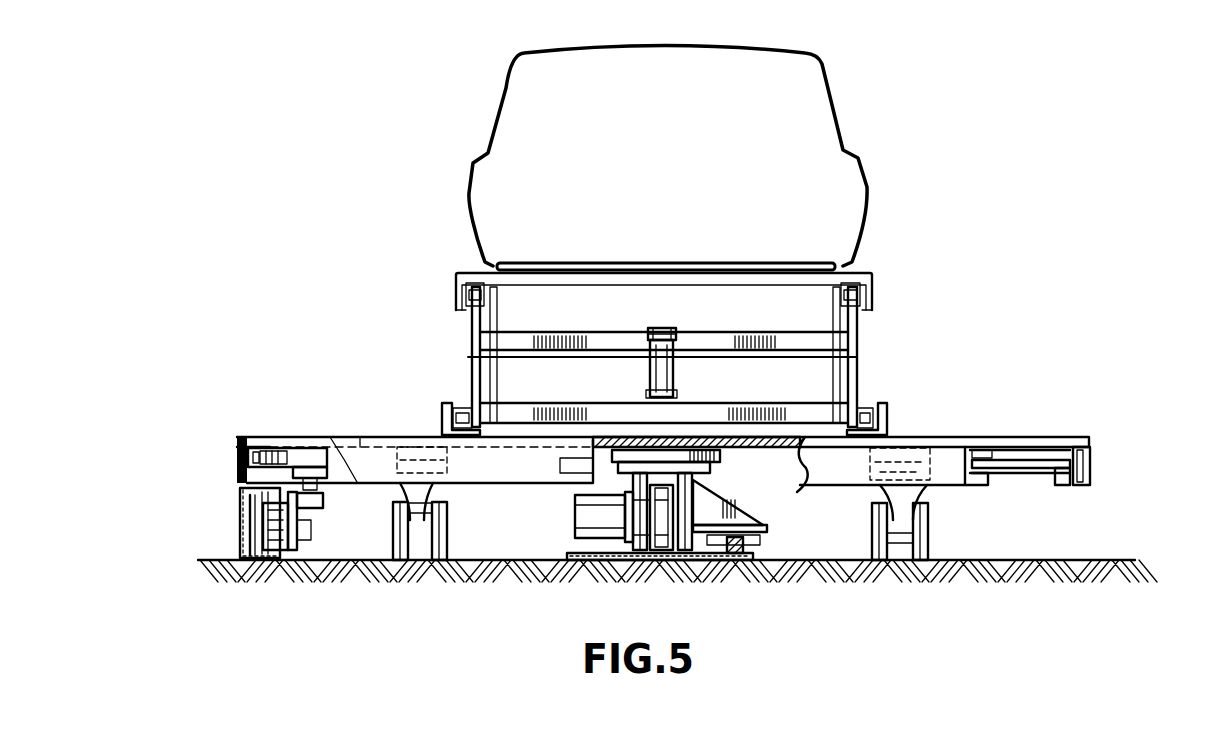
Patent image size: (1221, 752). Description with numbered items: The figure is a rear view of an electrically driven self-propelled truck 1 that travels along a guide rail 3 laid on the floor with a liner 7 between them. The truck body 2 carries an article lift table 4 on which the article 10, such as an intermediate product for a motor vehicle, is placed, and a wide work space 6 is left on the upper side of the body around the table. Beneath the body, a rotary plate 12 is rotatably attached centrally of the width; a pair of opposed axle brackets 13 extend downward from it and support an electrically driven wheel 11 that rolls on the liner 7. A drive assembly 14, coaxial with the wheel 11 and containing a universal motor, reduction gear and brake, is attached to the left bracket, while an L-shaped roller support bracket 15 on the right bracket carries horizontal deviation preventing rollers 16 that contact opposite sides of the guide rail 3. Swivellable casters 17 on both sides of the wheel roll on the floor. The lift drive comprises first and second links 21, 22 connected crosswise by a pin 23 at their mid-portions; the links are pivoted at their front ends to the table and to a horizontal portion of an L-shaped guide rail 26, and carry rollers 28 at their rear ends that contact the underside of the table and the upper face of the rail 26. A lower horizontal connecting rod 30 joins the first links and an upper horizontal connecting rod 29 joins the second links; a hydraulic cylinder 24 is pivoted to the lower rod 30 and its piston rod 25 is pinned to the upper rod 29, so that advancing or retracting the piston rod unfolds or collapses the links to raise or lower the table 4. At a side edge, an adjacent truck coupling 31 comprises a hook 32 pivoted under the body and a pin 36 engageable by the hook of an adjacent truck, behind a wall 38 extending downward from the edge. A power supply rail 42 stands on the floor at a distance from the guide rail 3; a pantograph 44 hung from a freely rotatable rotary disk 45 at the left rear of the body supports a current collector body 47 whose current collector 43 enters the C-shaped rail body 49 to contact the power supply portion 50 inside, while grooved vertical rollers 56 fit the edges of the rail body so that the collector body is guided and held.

The self-propelled truck 1 is at (1077, 415).
The truck body 2 is at (1077, 438).
The guide rail 3 is at (730, 557).
The article lift table 4 is at (872, 275).
The work space 6 is at (367, 437).
The liner 7 is at (562, 552).
The article 10 is at (843, 118).
The electrically driven wheel 11 is at (662, 552).
The rotary plate 12 is at (713, 463).
The axle bracket 13 is at (642, 552).
The drive assembly 14 is at (588, 513).
The roller support bracket 15 is at (737, 515).
The horizontal deviation preventing roller 16 is at (760, 540).
The caster 17 is at (445, 560).
The first link 21 is at (475, 322).
The second link 22 is at (492, 313).
The pin 23 is at (468, 357).
The hydraulic cylinder 24 is at (653, 370).
The piston rod 25 is at (665, 330).
The guide rail 26 is at (442, 417).
The roller 28 is at (460, 285).
The upper horizontal connecting rod 29 is at (598, 338).
The lower horizontal connecting rod 30 is at (723, 407).
The adjacent truck coupling 31 is at (1028, 478).
The hook 32 is at (1017, 467).
The pin 36 is at (1060, 480).
The wall 38 is at (1092, 483).
The power supply rail 42 is at (240, 508).
The current collector 43 is at (263, 560).
The pantograph 44 is at (340, 460).
The rotary disk 45 is at (237, 462).
The current collector body 47 is at (285, 560).
The rail body 49 is at (240, 540).
The power supply portion 50 is at (250, 560).
The vertical roller 56 is at (298, 530).